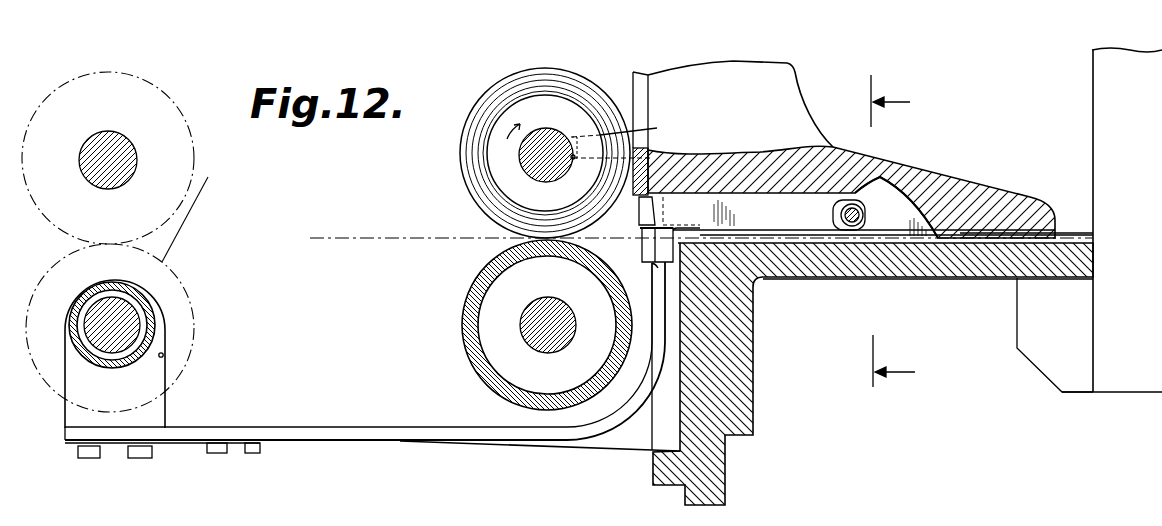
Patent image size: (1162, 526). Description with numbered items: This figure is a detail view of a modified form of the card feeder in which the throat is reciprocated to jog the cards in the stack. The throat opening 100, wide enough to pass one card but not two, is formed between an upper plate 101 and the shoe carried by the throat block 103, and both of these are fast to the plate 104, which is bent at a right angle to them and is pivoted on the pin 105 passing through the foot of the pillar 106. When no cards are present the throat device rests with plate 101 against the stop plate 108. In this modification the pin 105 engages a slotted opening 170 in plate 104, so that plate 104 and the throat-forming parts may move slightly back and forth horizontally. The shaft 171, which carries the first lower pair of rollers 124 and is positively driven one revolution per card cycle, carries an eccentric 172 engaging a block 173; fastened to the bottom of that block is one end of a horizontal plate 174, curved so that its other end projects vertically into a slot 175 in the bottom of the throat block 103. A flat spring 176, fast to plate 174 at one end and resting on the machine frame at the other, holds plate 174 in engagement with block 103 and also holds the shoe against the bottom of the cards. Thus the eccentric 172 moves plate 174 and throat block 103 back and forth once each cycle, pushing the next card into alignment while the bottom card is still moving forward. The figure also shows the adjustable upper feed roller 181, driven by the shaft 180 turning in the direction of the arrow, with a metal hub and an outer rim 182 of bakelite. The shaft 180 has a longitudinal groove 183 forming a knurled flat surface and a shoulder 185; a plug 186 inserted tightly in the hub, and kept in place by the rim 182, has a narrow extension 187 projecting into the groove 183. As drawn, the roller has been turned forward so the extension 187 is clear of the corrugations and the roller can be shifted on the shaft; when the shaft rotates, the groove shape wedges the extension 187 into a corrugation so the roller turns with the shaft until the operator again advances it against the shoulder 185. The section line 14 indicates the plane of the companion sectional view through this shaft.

The section line 14- 14 is at (877, 231).
The throat opening 100 is at (642, 228).
The upper plate 101 is at (645, 208).
The throat block 103 is at (650, 247).
The plate 104 is at (878, 216).
The pin 105 is at (882, 177).
The pillar 106 is at (793, 87).
The stop plate 108 is at (643, 92).
The first lower pair of rollers 124 is at (193, 170).
The slotted opening 170 is at (864, 213).
The shaft 171 is at (90, 318).
The eccentric 172 is at (152, 333).
The block 173 is at (167, 355).
The horizontal plate 174 is at (402, 430).
The slot 175 is at (657, 268).
The flat spring 176 is at (557, 445).
The shaft 180 is at (537, 158).
The rollers 181 is at (500, 155).
The rim 182 is at (478, 127).
The longitudinal groove 183 is at (572, 138).
The shoulder 185 is at (572, 157).
The plug 186 is at (645, 128).
The extension 187 is at (573, 140).